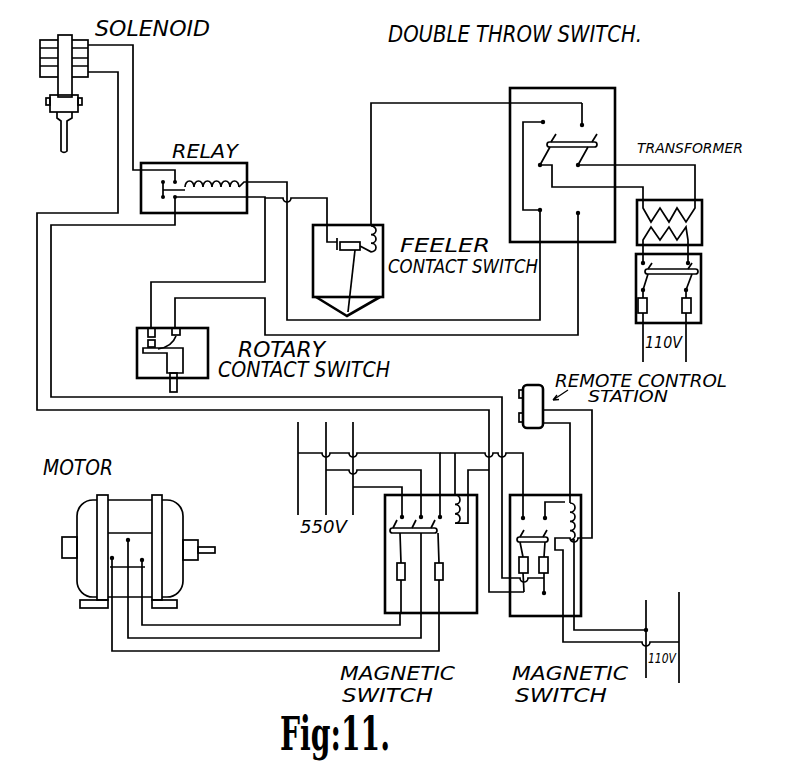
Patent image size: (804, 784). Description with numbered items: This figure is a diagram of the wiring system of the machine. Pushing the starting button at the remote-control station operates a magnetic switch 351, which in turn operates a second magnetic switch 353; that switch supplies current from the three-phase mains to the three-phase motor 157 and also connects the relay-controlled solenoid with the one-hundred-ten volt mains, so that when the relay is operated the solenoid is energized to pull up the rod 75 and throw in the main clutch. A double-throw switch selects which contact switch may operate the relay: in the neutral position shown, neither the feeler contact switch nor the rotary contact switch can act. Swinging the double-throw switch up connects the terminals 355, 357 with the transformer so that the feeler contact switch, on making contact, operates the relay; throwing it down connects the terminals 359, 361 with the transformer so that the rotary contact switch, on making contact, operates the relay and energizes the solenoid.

The rod 75 is at (70, 133).
The three-phase motor 157 is at (177, 507).
The magnetic switch 351 is at (533, 614).
The second magnetic switch 353 is at (455, 607).
The terminal 355 is at (543, 123).
The terminal 357 is at (583, 124).
The terminal 359 is at (541, 212).
The terminal 361 is at (579, 214).